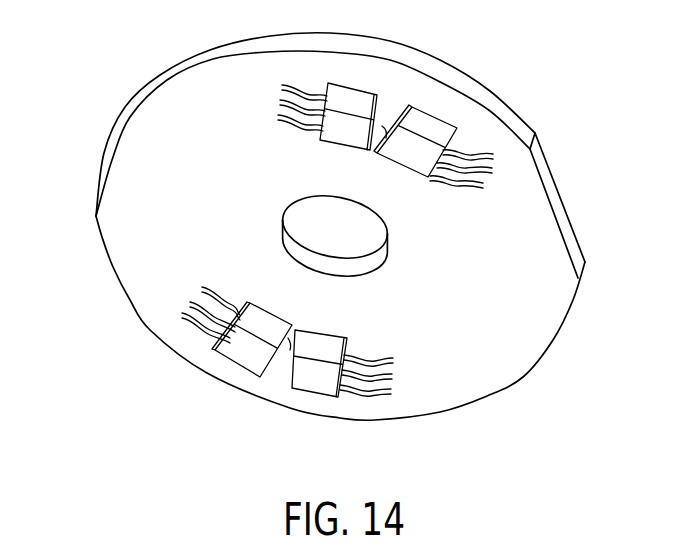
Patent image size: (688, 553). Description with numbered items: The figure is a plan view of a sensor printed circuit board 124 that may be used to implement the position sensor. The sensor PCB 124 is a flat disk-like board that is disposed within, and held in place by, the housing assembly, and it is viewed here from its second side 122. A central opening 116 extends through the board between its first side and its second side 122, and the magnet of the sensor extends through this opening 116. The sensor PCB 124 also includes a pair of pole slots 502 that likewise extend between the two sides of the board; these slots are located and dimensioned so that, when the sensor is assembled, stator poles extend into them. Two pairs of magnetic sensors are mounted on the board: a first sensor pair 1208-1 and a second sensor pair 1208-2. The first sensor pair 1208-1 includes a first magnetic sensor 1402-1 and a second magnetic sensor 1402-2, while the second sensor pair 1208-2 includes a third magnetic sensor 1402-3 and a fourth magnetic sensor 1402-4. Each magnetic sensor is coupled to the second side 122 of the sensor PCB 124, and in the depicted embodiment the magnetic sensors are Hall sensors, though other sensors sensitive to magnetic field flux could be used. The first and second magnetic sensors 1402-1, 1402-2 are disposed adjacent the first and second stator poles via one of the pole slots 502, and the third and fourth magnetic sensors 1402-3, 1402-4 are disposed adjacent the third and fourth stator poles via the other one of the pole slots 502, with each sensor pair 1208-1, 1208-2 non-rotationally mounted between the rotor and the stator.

The second side 122 is at (97, 218).
The sensor printed circuit board 124 is at (560, 197).
The opening 116 is at (357, 243).
The first sensor pair 1208-1 is at (506, 153).
The second sensor pair 1208-2 is at (388, 427).
The first magnetic sensor 1402-1 is at (330, 141).
The second magnetic sensor 1402-2 is at (420, 173).
The third magnetic sensor 1402-3 is at (345, 338).
The fourth magnetic sensor 1402-4 is at (265, 312).
The pole slots 502 is at (380, 128).